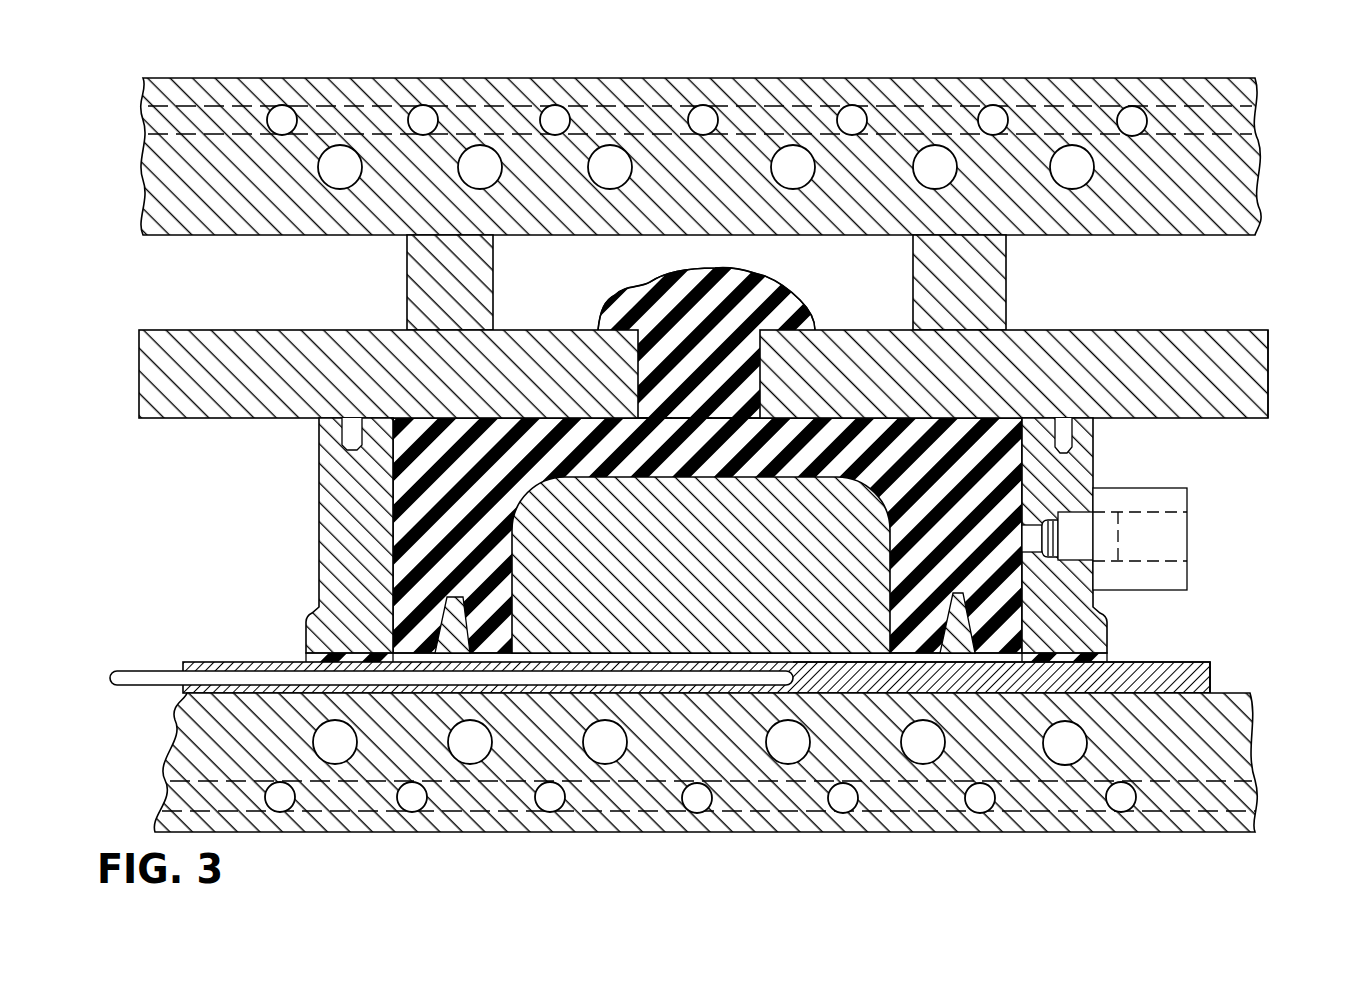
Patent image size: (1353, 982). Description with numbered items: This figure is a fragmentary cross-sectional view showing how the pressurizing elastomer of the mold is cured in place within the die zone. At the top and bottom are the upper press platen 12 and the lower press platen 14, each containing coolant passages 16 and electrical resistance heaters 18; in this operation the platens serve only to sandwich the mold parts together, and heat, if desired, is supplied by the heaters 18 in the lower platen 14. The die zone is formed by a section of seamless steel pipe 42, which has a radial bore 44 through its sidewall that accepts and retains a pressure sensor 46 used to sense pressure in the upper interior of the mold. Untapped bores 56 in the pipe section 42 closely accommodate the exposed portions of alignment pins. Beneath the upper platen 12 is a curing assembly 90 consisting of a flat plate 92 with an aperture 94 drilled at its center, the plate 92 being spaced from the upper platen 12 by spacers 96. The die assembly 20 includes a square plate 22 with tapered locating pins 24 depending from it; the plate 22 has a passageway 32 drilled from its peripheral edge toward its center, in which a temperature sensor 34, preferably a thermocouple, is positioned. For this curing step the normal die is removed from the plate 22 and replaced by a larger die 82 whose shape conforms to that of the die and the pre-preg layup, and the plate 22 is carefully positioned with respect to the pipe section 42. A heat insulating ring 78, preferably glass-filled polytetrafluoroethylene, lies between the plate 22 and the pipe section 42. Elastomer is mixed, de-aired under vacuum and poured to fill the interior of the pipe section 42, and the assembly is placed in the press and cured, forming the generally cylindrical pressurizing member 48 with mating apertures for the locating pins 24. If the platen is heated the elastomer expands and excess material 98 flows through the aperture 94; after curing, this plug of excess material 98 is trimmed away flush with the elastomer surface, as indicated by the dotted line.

The upper press platen 12 is at (512, 80).
The lower press platen 14 is at (422, 833).
The coolant passages 16 is at (284, 107).
The electrical resistance heaters 18 is at (1078, 754).
The die assembly 20 is at (1213, 676).
The square plate 22 is at (1190, 663).
The tapered locating pins 24 is at (457, 595).
The passageway 32 is at (205, 662).
The temperature sensor 34 is at (128, 669).
The pipe section 42 is at (343, 538).
The radial bore 44 is at (1075, 558).
The pressure sensor 46 is at (1187, 492).
The pressurizing member 48 is at (921, 476).
The untapped bores 56 is at (342, 432).
The heat insulating ring 78 is at (305, 655).
The larger die 82 is at (663, 592).
The curing assembly 90 is at (1270, 373).
The flat plate 92 is at (1113, 328).
The aperture 94 is at (760, 368).
The spacers 96 is at (496, 284).
The excess material 98 is at (714, 288).